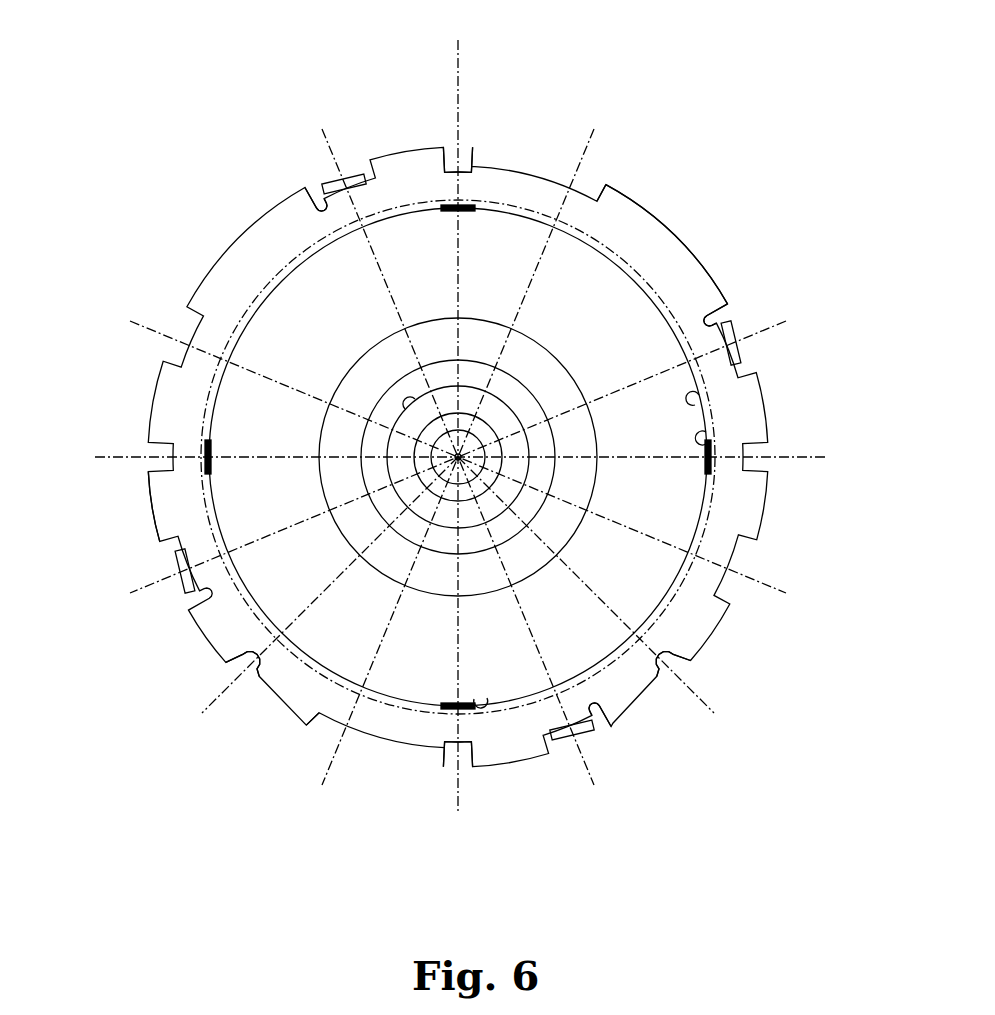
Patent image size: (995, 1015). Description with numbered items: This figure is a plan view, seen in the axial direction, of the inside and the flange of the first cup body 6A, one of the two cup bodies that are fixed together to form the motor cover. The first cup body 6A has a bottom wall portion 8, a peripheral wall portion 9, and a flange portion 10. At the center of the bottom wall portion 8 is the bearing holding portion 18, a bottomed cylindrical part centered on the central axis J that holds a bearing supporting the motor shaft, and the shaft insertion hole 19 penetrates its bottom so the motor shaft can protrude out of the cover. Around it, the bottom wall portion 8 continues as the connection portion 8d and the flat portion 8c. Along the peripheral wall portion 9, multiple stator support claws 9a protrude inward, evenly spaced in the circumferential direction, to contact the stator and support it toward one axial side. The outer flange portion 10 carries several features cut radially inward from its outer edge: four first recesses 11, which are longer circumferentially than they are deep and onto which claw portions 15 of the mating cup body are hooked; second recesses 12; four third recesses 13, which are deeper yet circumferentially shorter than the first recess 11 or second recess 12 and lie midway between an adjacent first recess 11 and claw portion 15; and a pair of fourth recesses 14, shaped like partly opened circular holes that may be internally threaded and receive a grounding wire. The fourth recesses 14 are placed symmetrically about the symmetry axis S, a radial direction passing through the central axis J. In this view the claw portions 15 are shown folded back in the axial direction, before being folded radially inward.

The first cup body 6A is at (690, 152).
The bottom wall portion 8 is at (654, 497).
The flat portion 8c is at (275, 333).
The connection portion 8d is at (340, 432).
The peripheral wall portion 9 is at (703, 402).
The stator support claw 9a is at (708, 438).
The flange portion 10 is at (683, 258).
The first recess 11 is at (598, 194).
The second recess 12 is at (318, 196).
The third recess 13 is at (462, 150).
The fourth recess 14 is at (248, 668).
The claw portion 15 is at (343, 178).
The bearing holding portion 18 is at (410, 404).
The shaft insertion hole 19 is at (180, 497).
The central axis J is at (540, 372).
The symmetry axis S is at (470, 46).